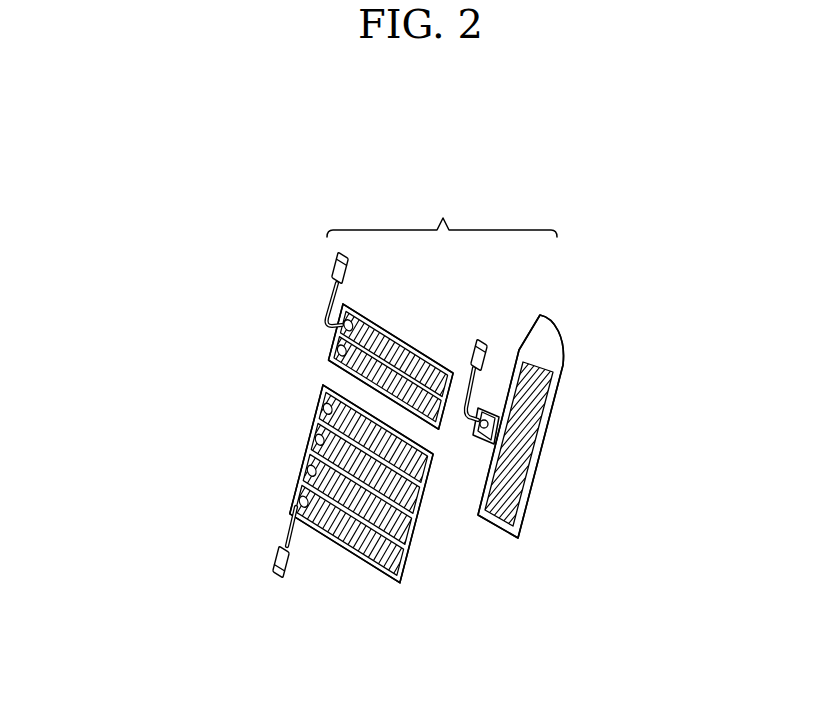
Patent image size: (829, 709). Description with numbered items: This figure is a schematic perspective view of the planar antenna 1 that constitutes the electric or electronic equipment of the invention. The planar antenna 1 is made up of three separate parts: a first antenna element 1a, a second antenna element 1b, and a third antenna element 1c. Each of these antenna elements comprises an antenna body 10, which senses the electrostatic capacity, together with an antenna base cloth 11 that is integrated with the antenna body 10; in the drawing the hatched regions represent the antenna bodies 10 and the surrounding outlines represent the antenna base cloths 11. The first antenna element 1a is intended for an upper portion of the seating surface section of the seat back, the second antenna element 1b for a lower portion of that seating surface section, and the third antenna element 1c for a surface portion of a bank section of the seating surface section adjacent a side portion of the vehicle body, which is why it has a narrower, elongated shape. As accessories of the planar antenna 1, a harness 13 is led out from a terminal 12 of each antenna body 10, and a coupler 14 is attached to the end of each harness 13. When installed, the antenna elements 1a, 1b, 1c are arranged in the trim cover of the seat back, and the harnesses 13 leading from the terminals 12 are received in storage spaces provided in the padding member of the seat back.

The planar antenna 1 is at (442, 212).
The first antenna element 1a is at (401, 324).
The second antenna element 1b is at (344, 563).
The third antenna element 1c is at (555, 442).
The antenna body 10 is at (366, 333).
The antenna base cloth 11 is at (325, 386).
The terminal 12 is at (336, 346).
The harness 13 is at (327, 303).
The coupler 14 is at (333, 265).